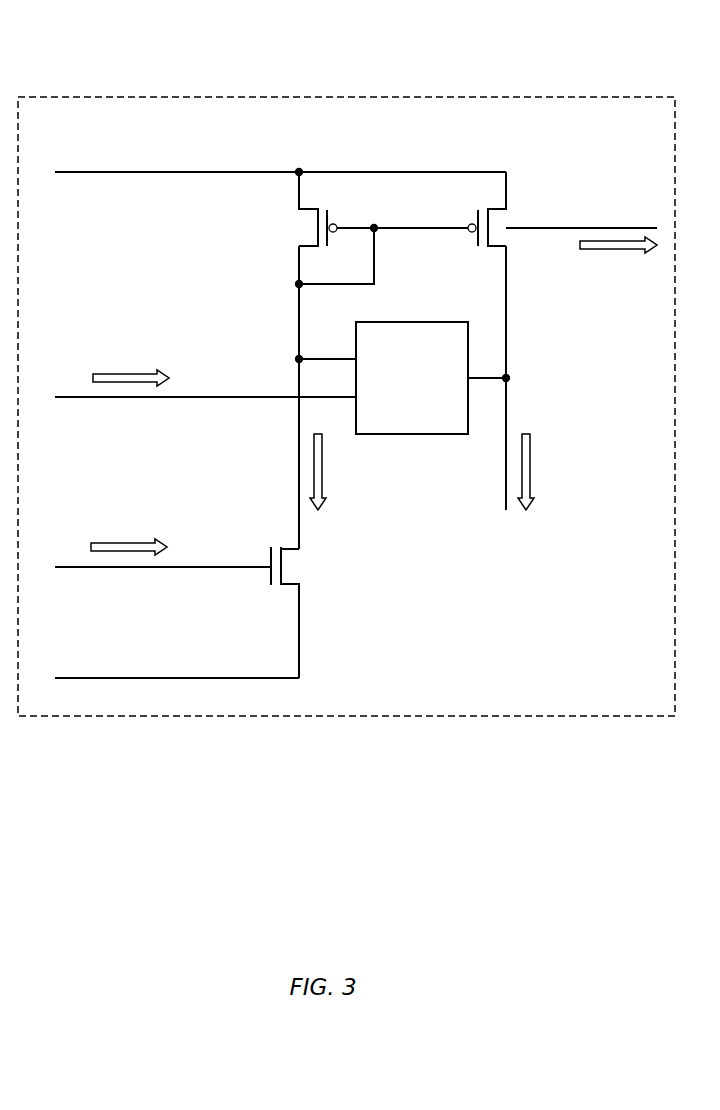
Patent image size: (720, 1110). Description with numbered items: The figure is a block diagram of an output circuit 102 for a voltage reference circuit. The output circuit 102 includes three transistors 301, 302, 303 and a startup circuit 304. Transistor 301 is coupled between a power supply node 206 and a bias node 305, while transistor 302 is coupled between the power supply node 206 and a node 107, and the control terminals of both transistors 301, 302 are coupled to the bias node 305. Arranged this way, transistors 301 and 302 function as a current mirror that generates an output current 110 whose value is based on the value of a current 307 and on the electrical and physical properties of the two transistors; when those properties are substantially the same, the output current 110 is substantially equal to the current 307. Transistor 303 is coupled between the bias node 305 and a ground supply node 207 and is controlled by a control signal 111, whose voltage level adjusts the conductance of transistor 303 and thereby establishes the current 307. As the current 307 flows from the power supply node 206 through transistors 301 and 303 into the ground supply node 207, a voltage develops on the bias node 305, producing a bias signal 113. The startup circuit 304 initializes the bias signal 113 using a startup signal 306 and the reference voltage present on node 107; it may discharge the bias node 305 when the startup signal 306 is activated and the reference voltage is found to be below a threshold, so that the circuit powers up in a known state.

The output circuit 102 is at (310, 94).
The power supply node 206 is at (280, 161).
The transistor 301 is at (300, 228).
The transistor 302 is at (478, 248).
The transistor 303 is at (300, 568).
The startup circuit 304 is at (412, 378).
The bias node 305 is at (297, 321).
The startup signal 306 is at (126, 372).
The node 107 is at (509, 360).
The output current 110 is at (531, 475).
The current 307 is at (323, 475).
The bias signal 113 is at (617, 252).
The control signal 111 is at (124, 540).
The ground supply node 207 is at (177, 652).